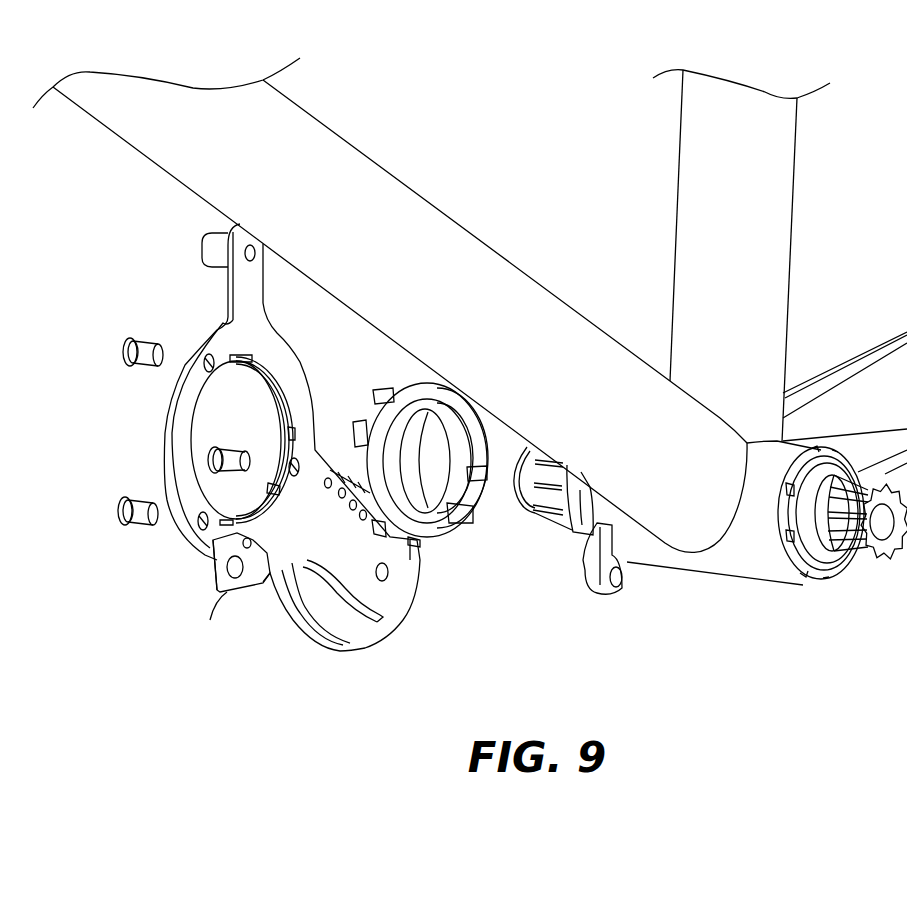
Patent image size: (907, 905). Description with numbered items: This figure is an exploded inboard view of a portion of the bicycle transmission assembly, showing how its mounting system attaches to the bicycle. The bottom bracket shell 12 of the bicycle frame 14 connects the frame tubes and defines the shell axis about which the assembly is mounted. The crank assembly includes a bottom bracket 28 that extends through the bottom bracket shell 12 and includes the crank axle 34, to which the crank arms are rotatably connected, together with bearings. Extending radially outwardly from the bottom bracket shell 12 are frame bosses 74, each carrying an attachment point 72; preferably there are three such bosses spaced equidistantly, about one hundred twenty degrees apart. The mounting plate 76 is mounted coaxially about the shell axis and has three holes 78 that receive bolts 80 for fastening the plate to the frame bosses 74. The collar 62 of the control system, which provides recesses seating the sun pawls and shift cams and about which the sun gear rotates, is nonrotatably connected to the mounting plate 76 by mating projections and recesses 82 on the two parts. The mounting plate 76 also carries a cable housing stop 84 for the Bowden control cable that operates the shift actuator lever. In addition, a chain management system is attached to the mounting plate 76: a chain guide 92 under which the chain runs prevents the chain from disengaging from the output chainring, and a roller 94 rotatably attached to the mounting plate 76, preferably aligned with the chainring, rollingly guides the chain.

The bottom bracket shell 12 is at (730, 558).
The bicycle frame 14 is at (473, 280).
The bottom bracket 28 is at (820, 593).
The crank axle 34 is at (852, 537).
The collar 62 is at (433, 523).
The attachment point 72 is at (622, 577).
The frame boss 74 is at (595, 590).
The mounting plate 76 is at (385, 598).
The holes 78 is at (203, 360).
The bolts 80 is at (210, 460).
The mating projections and recesses 82 is at (260, 347).
The cable housing stop 84 is at (230, 590).
The chain guide 92 is at (200, 240).
The roller 94 is at (362, 628).